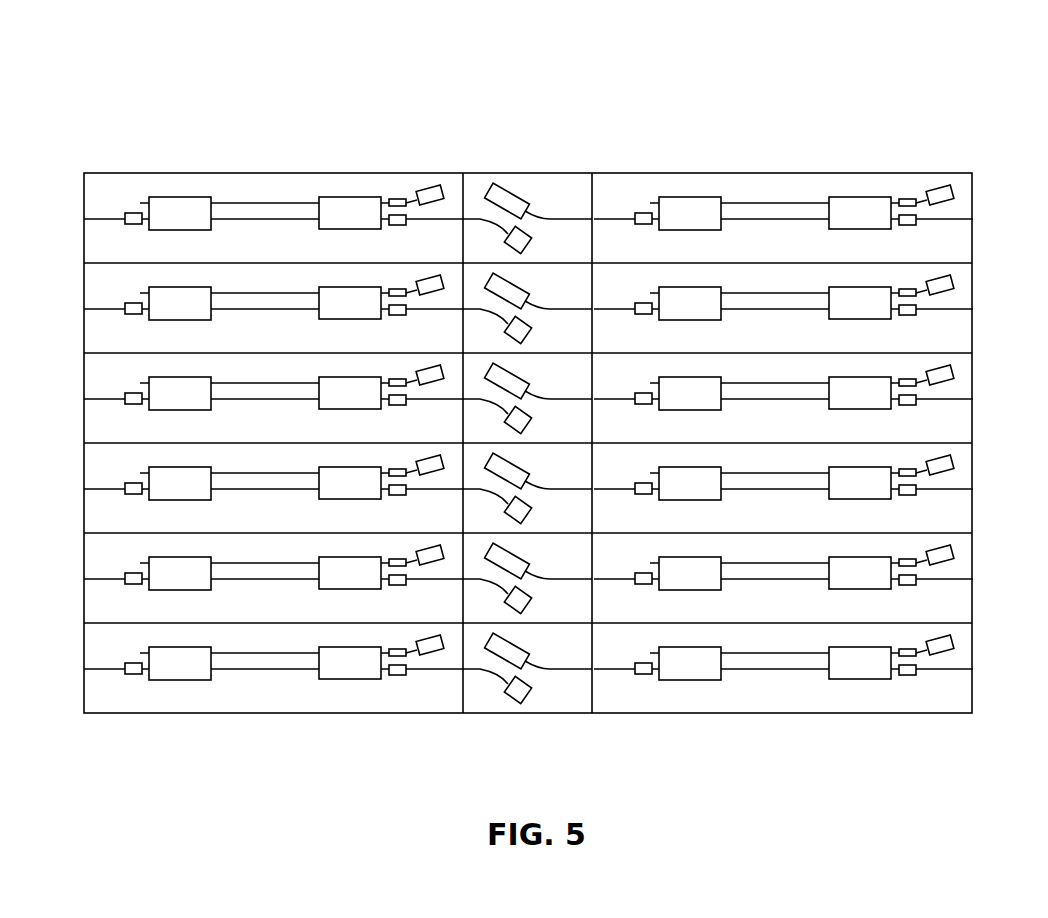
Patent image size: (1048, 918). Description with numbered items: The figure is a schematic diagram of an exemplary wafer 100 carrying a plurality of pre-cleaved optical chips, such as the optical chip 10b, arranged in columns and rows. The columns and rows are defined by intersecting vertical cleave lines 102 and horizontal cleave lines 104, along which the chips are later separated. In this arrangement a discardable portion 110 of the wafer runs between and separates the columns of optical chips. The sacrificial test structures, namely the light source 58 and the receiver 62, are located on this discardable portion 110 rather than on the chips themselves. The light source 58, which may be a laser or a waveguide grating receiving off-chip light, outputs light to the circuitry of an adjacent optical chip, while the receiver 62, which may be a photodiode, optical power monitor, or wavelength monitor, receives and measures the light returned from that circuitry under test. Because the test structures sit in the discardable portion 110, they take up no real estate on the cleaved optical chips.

The wafer 100 is at (927, 87).
The optical chip 10b is at (780, 172).
The vertical cleave lines 102 is at (448, 176).
The horizontal cleave lines 104 is at (100, 263).
The discardable portion 110 is at (565, 177).
The light source 58 is at (517, 178).
The receiver 62 is at (474, 178).